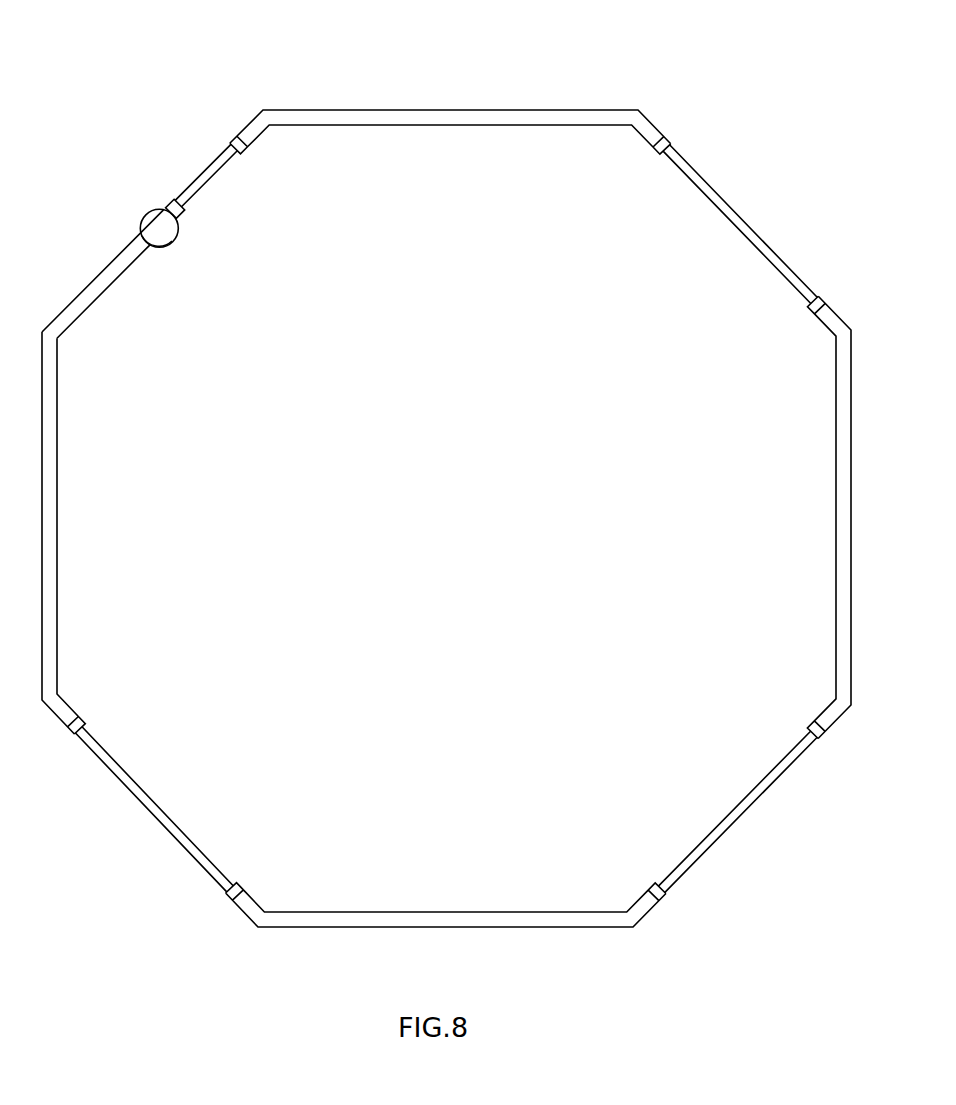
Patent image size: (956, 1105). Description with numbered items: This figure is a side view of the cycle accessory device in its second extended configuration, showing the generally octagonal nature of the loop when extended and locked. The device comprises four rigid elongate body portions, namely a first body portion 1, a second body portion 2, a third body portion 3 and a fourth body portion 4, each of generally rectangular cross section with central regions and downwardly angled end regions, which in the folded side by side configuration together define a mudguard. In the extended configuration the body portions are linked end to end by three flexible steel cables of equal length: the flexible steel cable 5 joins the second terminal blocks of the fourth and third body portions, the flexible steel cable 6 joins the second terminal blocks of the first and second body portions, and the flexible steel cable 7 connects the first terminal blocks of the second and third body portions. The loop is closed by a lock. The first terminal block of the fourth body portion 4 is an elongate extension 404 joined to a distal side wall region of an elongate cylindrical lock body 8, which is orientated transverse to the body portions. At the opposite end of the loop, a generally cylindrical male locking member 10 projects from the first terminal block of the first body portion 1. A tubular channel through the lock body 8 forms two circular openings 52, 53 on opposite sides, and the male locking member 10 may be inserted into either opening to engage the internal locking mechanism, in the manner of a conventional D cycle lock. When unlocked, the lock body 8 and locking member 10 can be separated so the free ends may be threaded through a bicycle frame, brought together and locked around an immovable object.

The first body portion 1 is at (469, 118).
The second body portion 2 is at (848, 468).
The third body portion 3 is at (467, 920).
The fourth body portion 4 is at (50, 535).
The flexible steel cable 5 is at (173, 833).
The flexible steel cable 6 is at (708, 192).
The flexible steel cable 7 is at (725, 827).
The elongate cylindrical lock body 8 is at (163, 231).
The male locking member 10 is at (222, 163).
The circular opening 52 is at (148, 247).
The circular opening 53 is at (167, 208).
The elongate extension 404 is at (98, 282).